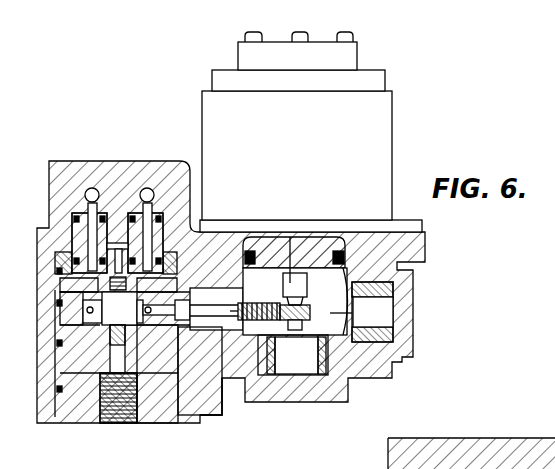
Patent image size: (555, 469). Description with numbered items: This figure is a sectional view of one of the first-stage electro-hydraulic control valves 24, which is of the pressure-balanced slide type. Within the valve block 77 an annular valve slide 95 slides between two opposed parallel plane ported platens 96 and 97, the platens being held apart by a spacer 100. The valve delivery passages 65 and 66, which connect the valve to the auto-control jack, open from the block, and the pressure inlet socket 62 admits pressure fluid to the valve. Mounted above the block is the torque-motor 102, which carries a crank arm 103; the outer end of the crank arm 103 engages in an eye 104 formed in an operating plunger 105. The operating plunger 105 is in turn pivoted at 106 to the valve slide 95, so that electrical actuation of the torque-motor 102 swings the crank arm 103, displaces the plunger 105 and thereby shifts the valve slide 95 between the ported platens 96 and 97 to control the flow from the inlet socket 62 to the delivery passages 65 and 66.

The first-stage electro-hydraulic valve 24 is at (33, 224).
The ported platen 96 is at (60, 270).
The valve delivery passage 65 is at (93, 189).
The valve delivery passage 66 is at (148, 189).
The operating plunger 105 is at (214, 305).
The crank arm 103 is at (290, 283).
The torque-motor 102 is at (383, 128).
The eye 104 is at (393, 314).
The valve block 77 is at (223, 378).
The spacer 100 is at (73, 315).
The valve slide 95 is at (93, 320).
The pressure inlet socket 62 is at (119, 393).
The ported platen 97 is at (145, 353).
The pivot 106 is at (212, 360).